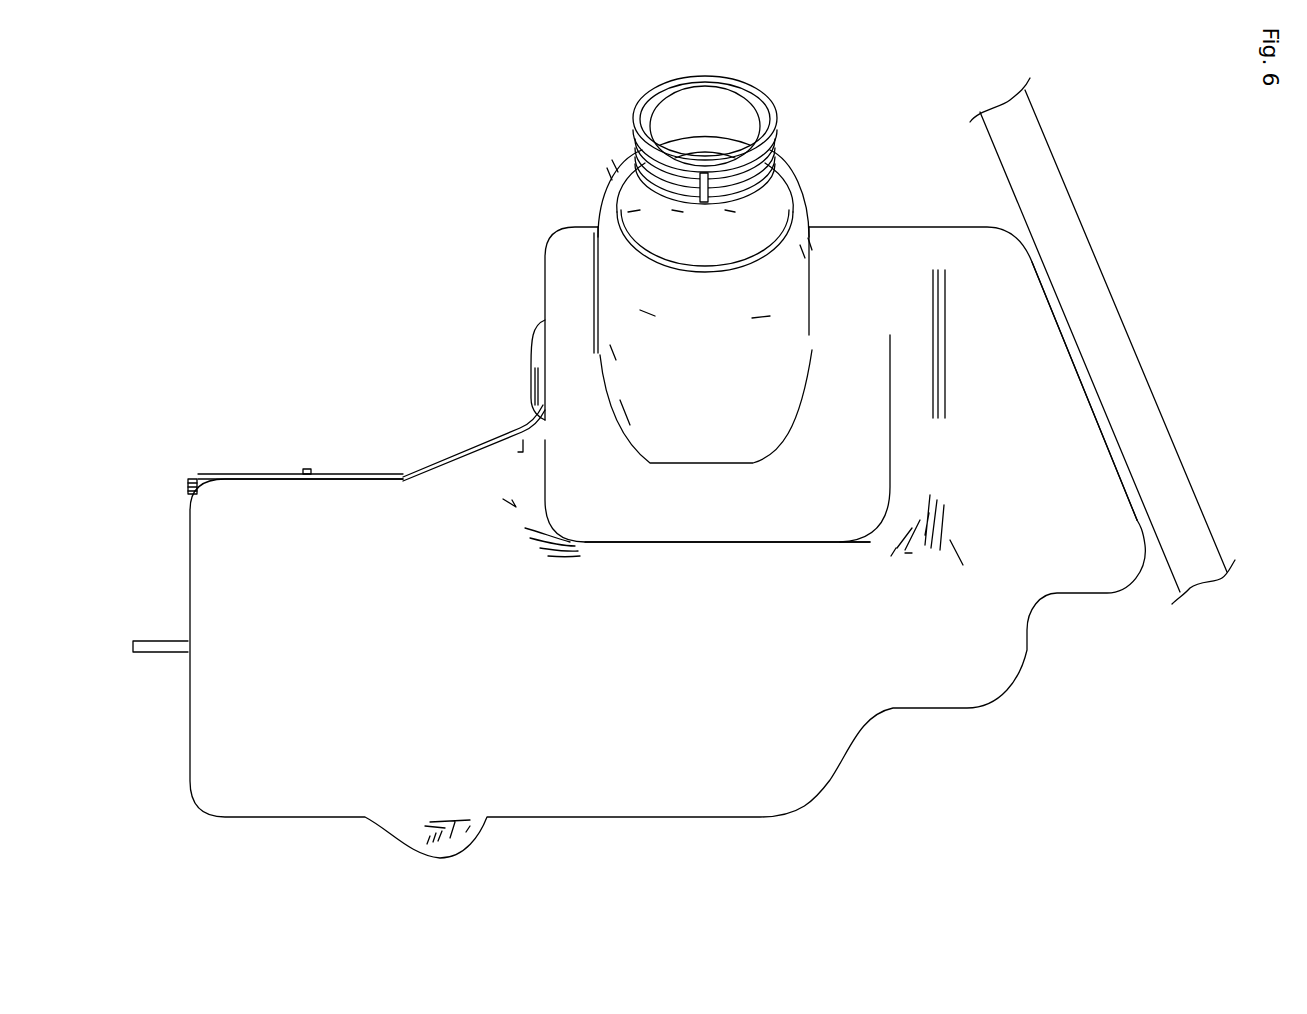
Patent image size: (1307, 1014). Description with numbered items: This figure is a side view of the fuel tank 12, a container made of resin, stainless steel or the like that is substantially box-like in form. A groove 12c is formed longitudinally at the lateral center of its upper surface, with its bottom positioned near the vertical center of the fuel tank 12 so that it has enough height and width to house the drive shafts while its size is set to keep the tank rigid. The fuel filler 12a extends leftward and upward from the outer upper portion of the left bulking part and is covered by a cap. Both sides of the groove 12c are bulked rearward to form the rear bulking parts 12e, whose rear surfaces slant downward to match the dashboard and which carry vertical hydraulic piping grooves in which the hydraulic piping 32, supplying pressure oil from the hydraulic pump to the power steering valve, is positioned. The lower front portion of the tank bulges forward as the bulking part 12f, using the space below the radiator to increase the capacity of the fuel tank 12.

The fuel tank 12 is at (639, 467).
The fuel filler 12a is at (777, 131).
The groove 12c is at (478, 303).
The rear bulking part 12e is at (858, 490).
The bulking part 12f is at (368, 684).
The hydraulic piping 32 is at (1152, 390).